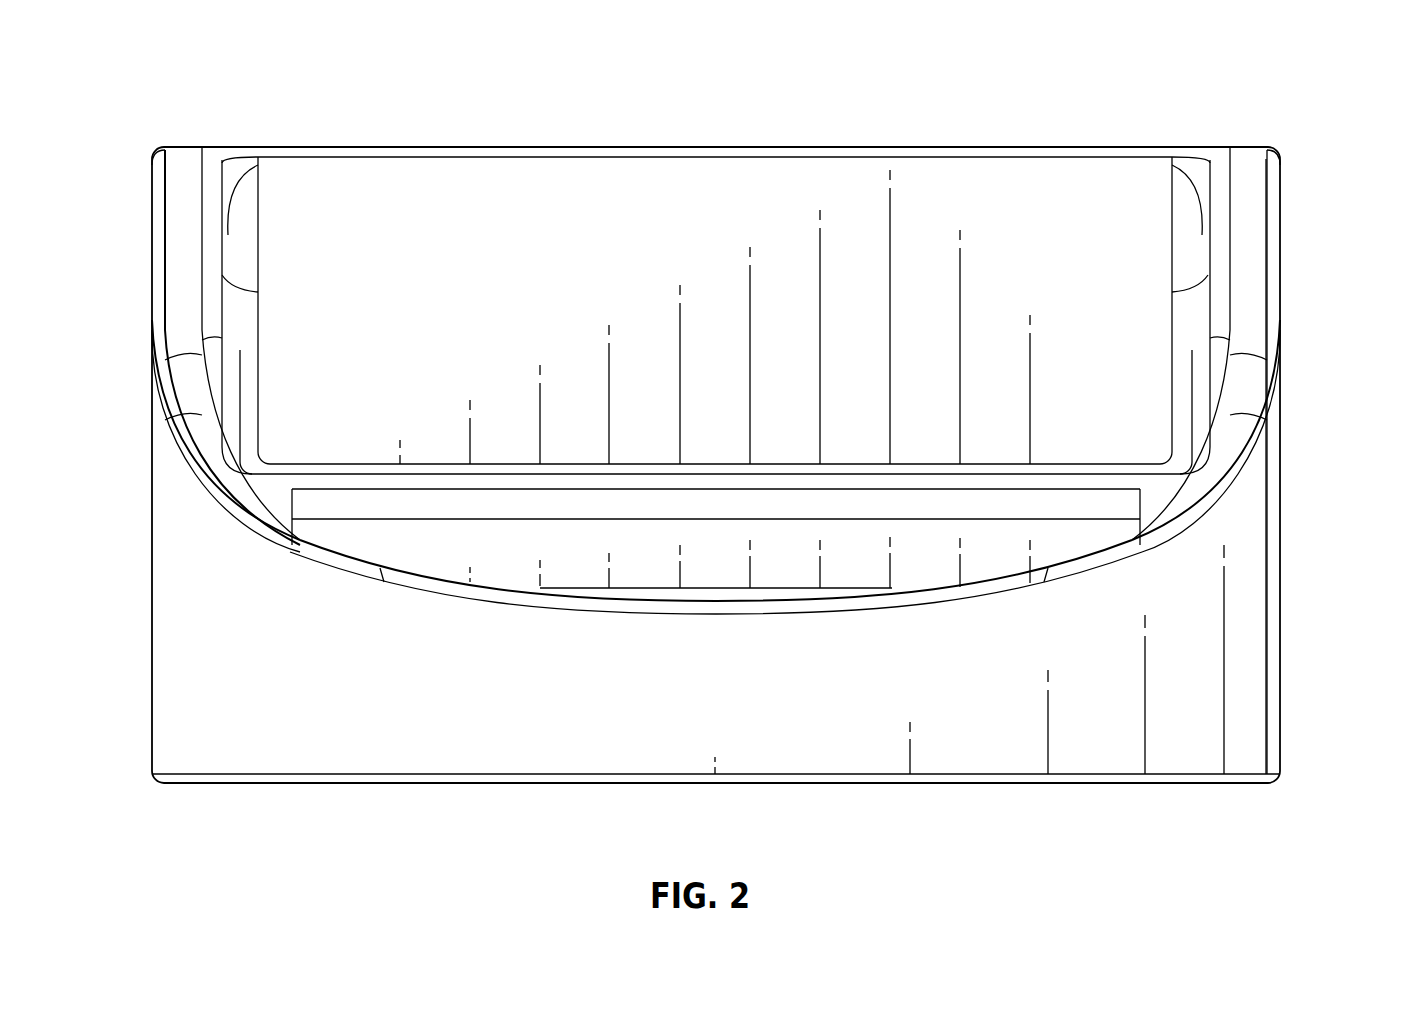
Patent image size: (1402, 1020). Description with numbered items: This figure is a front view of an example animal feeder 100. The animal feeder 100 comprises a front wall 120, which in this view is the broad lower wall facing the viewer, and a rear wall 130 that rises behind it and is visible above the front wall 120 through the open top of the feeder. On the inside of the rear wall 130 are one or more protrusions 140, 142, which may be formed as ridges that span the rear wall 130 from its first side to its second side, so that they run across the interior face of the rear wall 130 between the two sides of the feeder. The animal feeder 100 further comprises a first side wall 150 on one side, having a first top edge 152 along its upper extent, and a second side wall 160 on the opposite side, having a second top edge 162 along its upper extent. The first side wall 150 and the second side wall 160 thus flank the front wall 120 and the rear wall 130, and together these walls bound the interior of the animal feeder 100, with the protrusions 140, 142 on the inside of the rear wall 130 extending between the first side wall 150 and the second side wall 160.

The animal feeder 100 is at (238, 72).
The front wall 120 is at (573, 733).
The rear wall 130 is at (1065, 188).
The protrusion 140 is at (662, 585).
The protrusion 142 is at (772, 463).
The first side wall 150 is at (1278, 337).
The first top edge 152 is at (1242, 256).
The second side wall 160 is at (150, 325).
The second top edge 162 is at (180, 225).